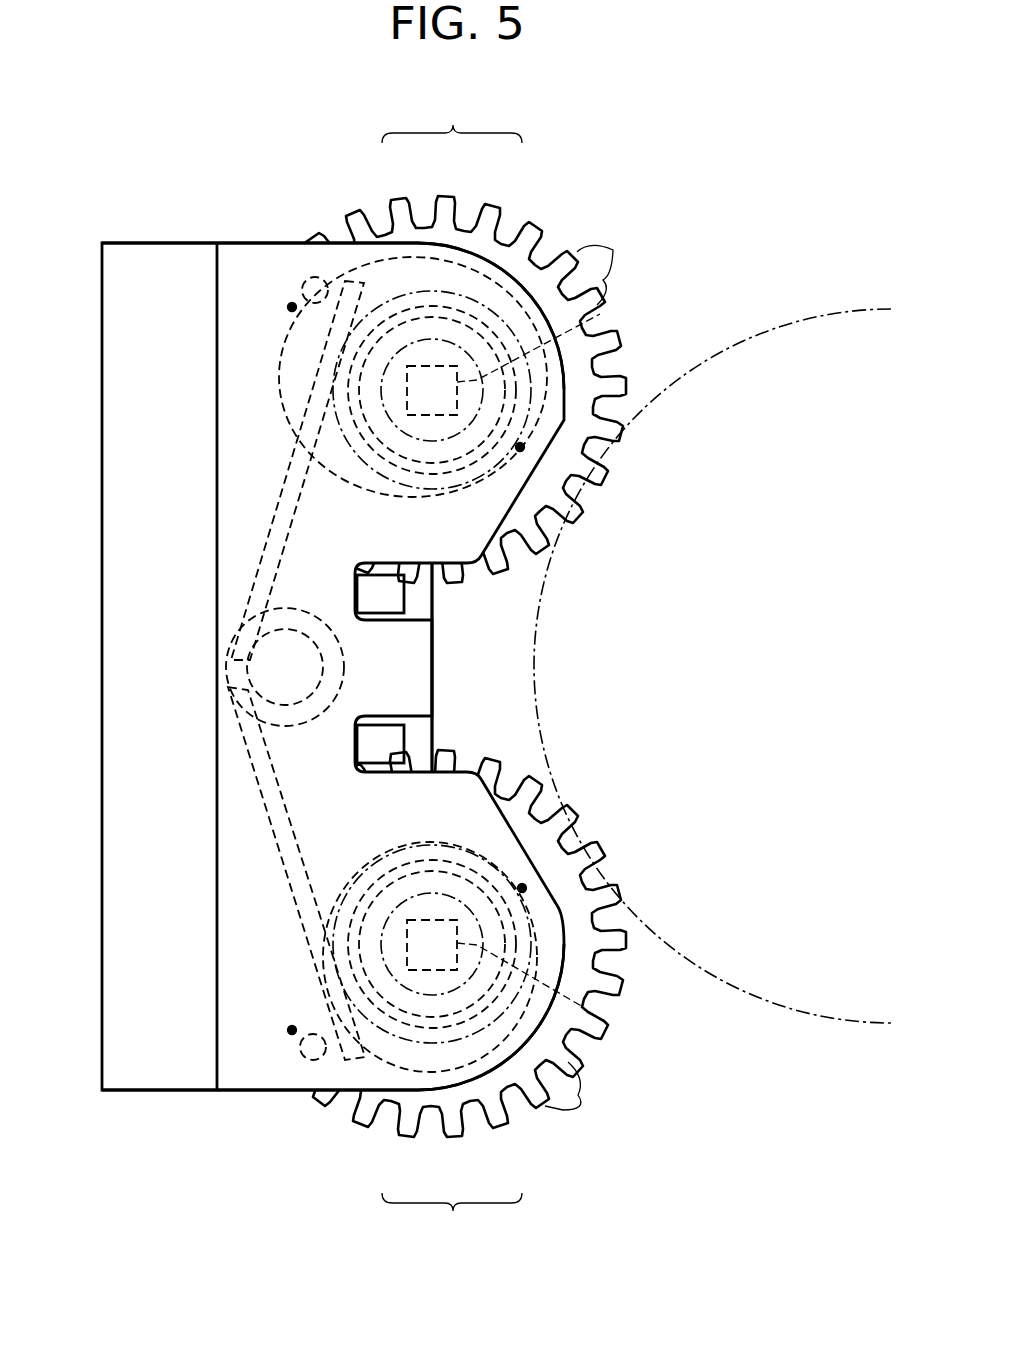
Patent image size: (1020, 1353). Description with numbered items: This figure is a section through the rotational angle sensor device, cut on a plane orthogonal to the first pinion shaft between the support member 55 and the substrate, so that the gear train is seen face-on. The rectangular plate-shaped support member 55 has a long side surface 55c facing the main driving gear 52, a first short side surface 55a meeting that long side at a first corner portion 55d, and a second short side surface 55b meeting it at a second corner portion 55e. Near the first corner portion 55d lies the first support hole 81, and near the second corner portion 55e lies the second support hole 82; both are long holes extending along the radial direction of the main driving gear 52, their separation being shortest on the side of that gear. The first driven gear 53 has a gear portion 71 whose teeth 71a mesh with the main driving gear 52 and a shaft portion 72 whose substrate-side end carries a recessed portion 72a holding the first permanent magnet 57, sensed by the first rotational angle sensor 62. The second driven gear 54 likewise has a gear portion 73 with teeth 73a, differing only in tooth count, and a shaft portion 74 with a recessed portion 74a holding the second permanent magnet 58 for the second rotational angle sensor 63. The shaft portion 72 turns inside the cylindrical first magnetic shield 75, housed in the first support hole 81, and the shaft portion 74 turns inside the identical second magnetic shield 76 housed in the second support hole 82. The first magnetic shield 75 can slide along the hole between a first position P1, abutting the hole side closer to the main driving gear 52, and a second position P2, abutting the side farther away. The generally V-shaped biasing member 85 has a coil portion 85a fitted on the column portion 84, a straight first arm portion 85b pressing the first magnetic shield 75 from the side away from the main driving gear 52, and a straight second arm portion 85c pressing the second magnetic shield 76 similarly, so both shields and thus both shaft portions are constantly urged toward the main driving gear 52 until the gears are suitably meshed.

The main driving gear 52 is at (770, 332).
The first driven gear 53 is at (452, 1220).
The second driven gear 54 is at (452, 116).
The support member 55 is at (100, 357).
The first short side surface 55a is at (155, 1092).
The second short side surface 55b is at (172, 243).
The long side surface 55c is at (433, 641).
The first corner portion 55d is at (570, 1043).
The second corner portion 55e is at (523, 297).
The first permanent magnet 57 is at (440, 915).
The second permanent magnet 58 is at (438, 430).
The first rotational angle sensor 62 is at (583, 1007).
The second rotational angle sensor 63 is at (600, 314).
The gear portion 71 is at (500, 1125).
The teeth 71a is at (581, 1105).
The shaft portion 72 is at (420, 1017).
The recessed portion 72a is at (400, 903).
The gear portion 73 is at (523, 225).
The teeth 73a is at (613, 257).
The shaft portion 74 is at (422, 317).
The recessed portion 74a is at (398, 430).
The first magnetic shield 75 is at (380, 1030).
The second magnetic shield 76 is at (388, 303).
The first support hole 81 is at (330, 1050).
The second support hole 82 is at (327, 283).
The column portion 84 is at (273, 677).
The biasing member 85 is at (243, 602).
The coil portion 85a is at (343, 667).
The first arm portion 85b is at (300, 893).
The second arm portion 85c is at (300, 460).
The first position P1 is at (520, 447).
The second position P2 is at (292, 307).